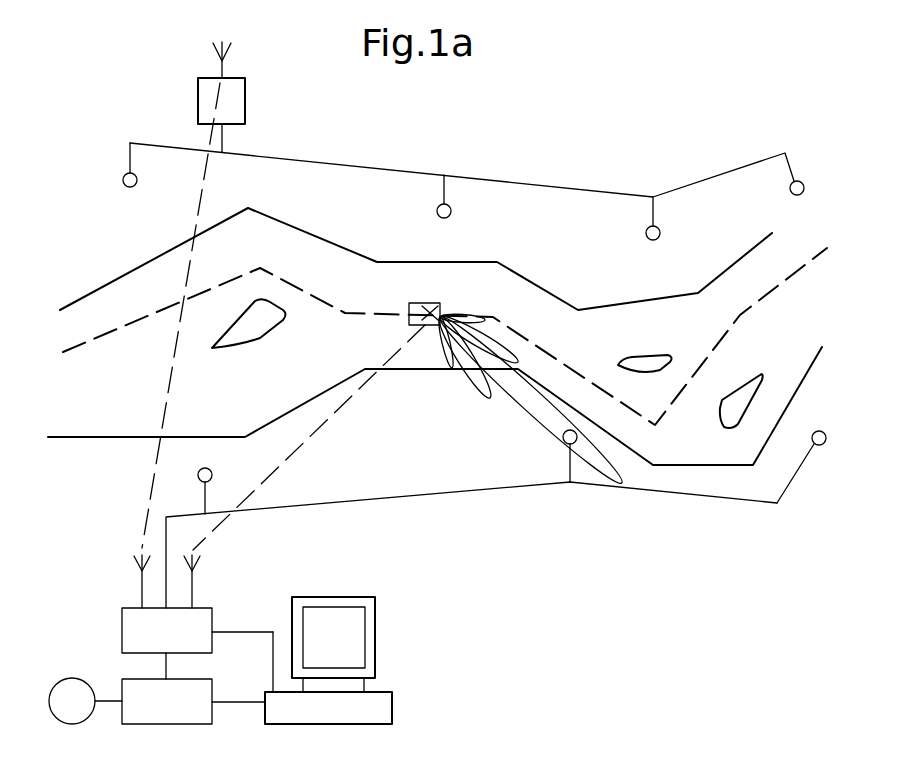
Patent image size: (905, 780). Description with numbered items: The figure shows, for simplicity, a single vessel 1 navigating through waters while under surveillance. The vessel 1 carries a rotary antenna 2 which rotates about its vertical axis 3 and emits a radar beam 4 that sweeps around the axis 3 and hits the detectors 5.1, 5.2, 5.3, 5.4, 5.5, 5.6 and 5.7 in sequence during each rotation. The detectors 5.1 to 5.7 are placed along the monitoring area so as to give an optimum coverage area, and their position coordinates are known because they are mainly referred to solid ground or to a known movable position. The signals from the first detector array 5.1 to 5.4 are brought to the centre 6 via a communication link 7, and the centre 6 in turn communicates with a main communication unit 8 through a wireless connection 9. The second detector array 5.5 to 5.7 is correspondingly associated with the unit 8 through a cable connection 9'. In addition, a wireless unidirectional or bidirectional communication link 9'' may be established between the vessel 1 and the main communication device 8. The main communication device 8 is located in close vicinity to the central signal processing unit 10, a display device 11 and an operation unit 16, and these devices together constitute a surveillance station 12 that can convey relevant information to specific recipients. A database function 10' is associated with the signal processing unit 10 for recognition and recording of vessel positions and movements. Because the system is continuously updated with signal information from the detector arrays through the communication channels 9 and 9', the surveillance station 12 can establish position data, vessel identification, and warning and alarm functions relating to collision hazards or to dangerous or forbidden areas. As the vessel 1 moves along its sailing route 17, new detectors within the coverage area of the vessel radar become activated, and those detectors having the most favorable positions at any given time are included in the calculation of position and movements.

The vessel 1 is at (409, 308).
The rotary antenna 2 is at (440, 308).
The vertical axis 3 is at (408, 318).
The radar beam 4 is at (525, 407).
The detector 5.1 is at (149, 167).
The detector 5.2 is at (463, 199).
The detector 5.3 is at (671, 221).
The detector 5.4 is at (815, 190).
The detector 5.5 is at (813, 456).
The detector 5.6 is at (562, 436).
The detector 5.7 is at (223, 489).
The centre 6 is at (245, 95).
The communication link 7 is at (563, 183).
The main communication unit 8 is at (122, 618).
The wireless connection 9 is at (162, 315).
The cable connection 9' is at (471, 545).
The wireless communication link 9'' is at (309, 437).
The central signal processing unit 10 is at (184, 708).
The database function 10' is at (76, 669).
The display device 11 is at (378, 647).
The surveillance station 12 is at (397, 594).
The operation unit 16 is at (390, 712).
The sailing route 17 is at (100, 340).